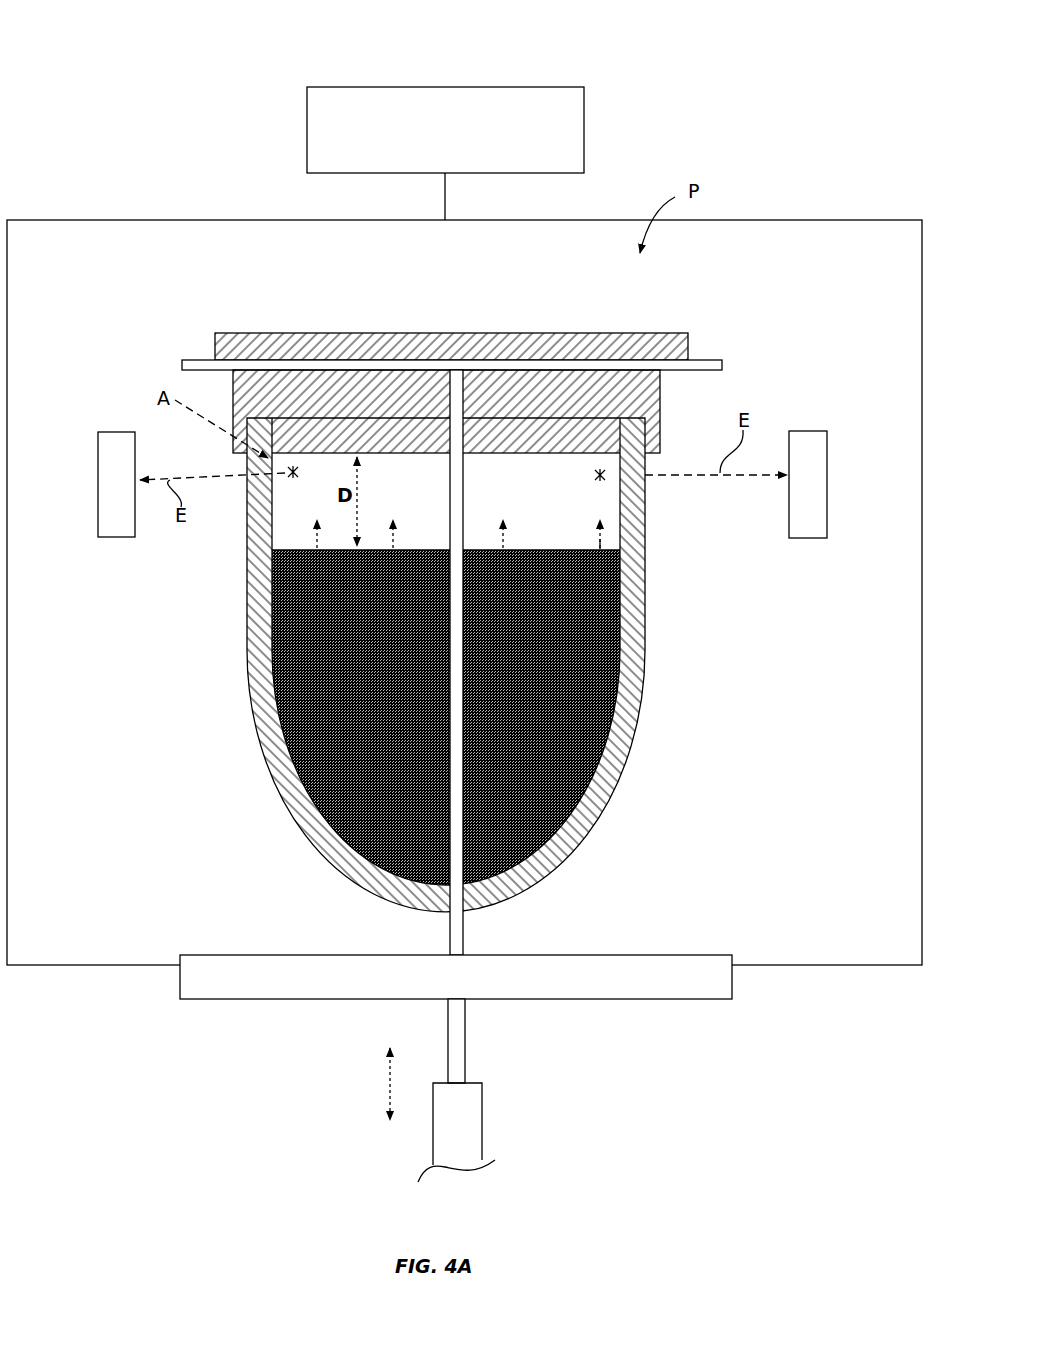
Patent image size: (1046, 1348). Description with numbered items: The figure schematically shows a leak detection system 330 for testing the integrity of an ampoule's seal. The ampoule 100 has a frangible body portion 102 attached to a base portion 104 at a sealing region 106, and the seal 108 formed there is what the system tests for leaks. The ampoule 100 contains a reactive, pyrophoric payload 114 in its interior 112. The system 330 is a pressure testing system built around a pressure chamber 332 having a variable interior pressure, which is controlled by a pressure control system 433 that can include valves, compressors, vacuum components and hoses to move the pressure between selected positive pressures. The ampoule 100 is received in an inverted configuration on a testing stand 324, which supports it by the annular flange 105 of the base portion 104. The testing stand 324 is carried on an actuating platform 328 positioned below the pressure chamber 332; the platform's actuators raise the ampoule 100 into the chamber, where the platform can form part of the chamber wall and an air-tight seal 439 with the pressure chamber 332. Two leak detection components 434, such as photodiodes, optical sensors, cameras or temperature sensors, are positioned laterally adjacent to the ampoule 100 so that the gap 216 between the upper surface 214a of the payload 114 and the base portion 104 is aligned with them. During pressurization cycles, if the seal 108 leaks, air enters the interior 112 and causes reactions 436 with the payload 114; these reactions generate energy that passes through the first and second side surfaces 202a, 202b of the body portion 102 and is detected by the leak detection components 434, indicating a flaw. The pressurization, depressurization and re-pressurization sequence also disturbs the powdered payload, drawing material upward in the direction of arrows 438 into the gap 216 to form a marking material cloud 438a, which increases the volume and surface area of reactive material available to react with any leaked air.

The leak detection system 330 is at (175, 72).
The pressure chamber 332 is at (123, 220).
The pressure control system 433 is at (463, 156).
The ampoule 100 is at (120, 340).
The base portion 104 is at (540, 333).
The annular flange 105 is at (688, 347).
The testing stand 324 is at (722, 365).
The sealing region 106 is at (672, 437).
The seal 108 is at (633, 430).
The body portion 102 is at (628, 753).
The payload 114 is at (371, 692).
The first side surface 202a is at (245, 492).
The second side surface 202b is at (647, 512).
The gap 216 is at (283, 533).
The interior 112 is at (605, 698).
The arrows 438 is at (600, 543).
The marking material cloud 438a is at (433, 484).
The upper surface 214a is at (560, 548).
The reactions 436 is at (293, 466).
The leak detection components 434 is at (98, 485).
The air-tight seal 439 is at (173, 972).
The actuating platform 328 is at (465, 1058).